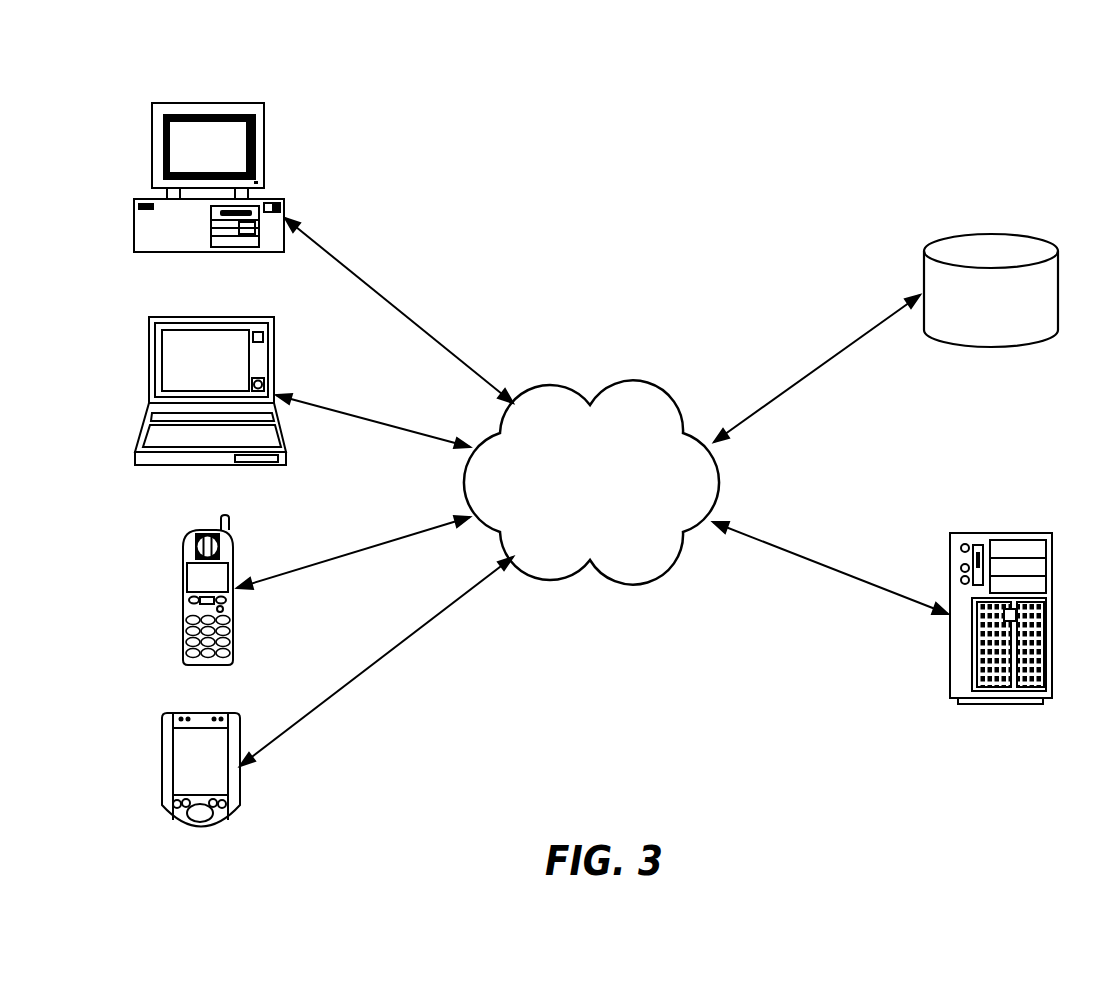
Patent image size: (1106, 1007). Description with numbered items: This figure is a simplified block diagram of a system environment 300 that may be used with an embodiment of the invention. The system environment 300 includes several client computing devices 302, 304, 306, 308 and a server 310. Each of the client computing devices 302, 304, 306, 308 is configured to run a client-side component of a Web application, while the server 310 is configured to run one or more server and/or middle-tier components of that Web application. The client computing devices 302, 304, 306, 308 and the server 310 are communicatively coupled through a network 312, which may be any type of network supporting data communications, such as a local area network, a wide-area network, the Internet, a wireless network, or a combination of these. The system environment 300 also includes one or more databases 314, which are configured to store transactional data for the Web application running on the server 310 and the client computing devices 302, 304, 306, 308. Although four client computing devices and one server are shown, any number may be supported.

The system environment 300 is at (878, 112).
The client computing device 302 is at (208, 103).
The client computing device 304 is at (210, 317).
The client computing device 306 is at (200, 530).
The client computing device 308 is at (200, 713).
The server 310 is at (1000, 533).
The network 312 is at (601, 522).
The databases 314 is at (1030, 234).